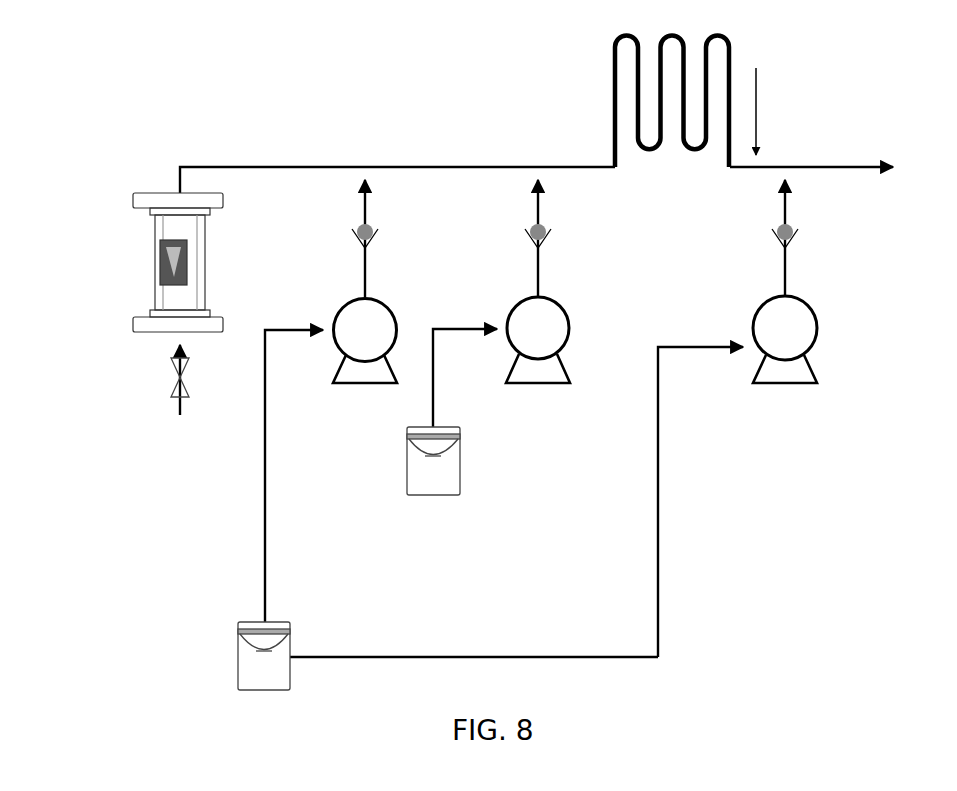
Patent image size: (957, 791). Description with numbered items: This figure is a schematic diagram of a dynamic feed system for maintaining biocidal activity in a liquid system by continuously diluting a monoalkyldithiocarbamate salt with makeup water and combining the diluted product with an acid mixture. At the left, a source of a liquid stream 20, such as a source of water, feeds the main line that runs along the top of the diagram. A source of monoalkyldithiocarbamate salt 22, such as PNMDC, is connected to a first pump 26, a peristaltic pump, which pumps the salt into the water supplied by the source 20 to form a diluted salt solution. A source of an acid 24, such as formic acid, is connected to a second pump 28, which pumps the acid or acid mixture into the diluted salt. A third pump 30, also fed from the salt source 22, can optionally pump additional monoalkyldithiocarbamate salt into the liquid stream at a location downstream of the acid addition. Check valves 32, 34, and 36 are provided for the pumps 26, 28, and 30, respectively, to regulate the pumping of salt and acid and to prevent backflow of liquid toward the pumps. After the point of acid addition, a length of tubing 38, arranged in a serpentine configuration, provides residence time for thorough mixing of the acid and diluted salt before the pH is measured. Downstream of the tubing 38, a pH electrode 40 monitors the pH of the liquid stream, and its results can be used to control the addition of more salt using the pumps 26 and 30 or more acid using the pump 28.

The source of a liquid stream 20 is at (178, 405).
The source of monoalkyldithiocarbamate salt 22 is at (240, 668).
The source of an acid 24 is at (408, 470).
The first pump 26 is at (395, 312).
The second pump 28 is at (565, 308).
The third pump 30 is at (818, 340).
The check valve 32 is at (354, 238).
The check valve 34 is at (530, 242).
The check valve 36 is at (775, 240).
The length of tubing 38 is at (612, 60).
The pH electrode 40 is at (757, 123).